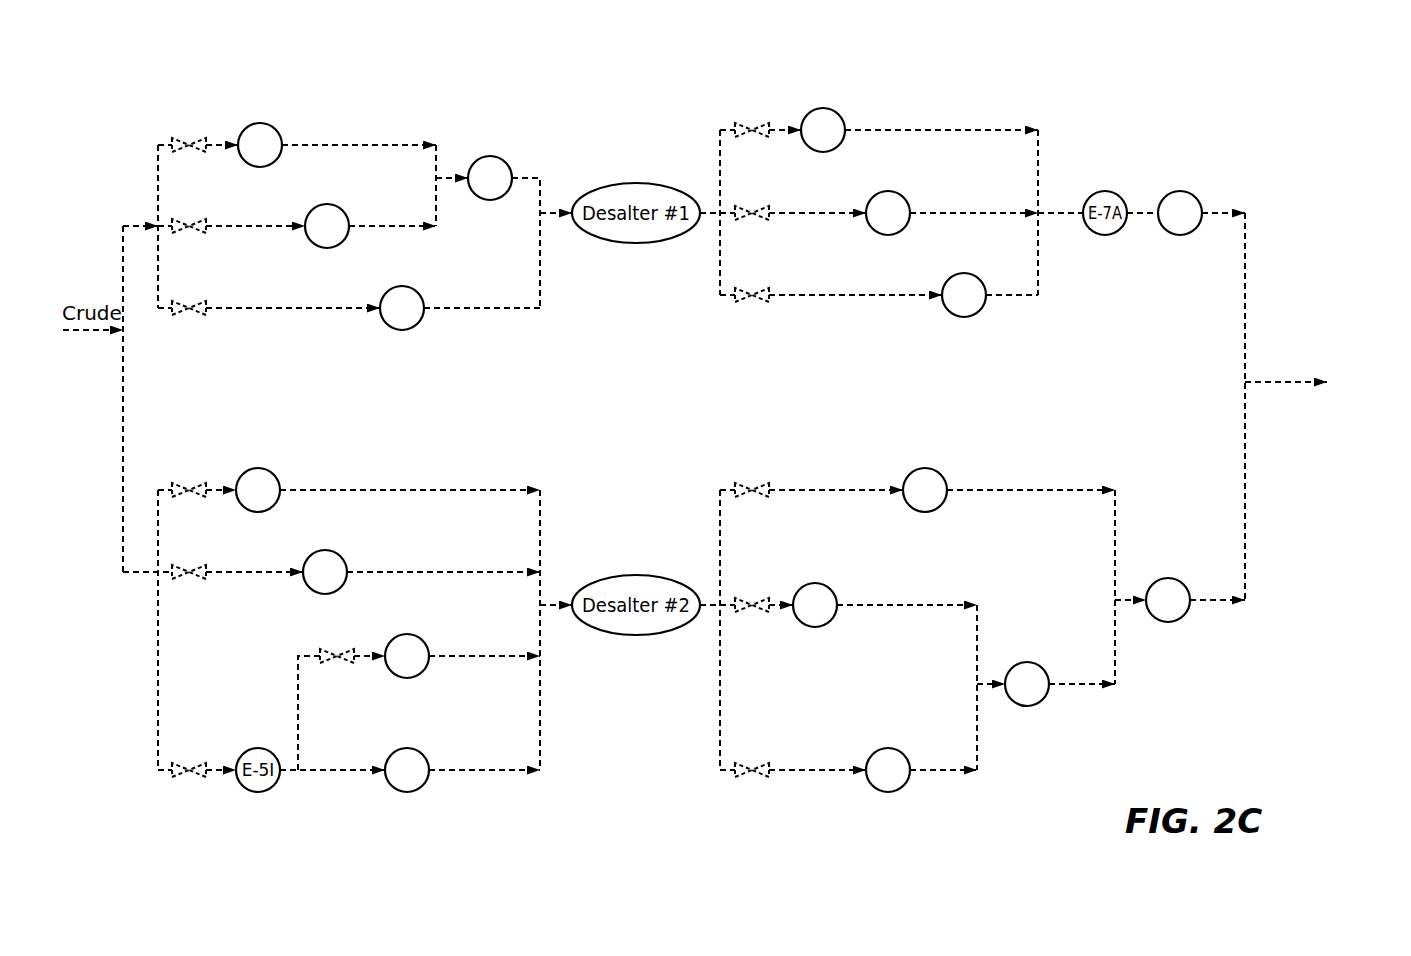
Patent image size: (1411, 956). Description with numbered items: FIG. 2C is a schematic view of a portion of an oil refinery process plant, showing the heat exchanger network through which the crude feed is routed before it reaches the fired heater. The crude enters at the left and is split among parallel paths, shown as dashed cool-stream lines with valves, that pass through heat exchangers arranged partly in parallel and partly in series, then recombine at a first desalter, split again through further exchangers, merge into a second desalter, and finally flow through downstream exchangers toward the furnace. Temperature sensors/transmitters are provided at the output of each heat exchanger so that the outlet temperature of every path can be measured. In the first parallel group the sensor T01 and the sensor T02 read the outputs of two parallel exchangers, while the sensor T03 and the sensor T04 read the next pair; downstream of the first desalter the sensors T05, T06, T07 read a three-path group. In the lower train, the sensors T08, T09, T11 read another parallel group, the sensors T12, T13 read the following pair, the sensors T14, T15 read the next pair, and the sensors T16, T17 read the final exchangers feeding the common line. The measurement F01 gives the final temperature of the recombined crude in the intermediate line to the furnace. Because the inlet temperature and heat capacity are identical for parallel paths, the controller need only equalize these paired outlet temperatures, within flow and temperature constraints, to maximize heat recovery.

The temperature sensor/transmitter T01 is at (295, 145).
The temperature sensor/transmitter T02 is at (363, 226).
The temperature sensor/transmitter T03 is at (528, 178).
The temperature sensor/transmitter T04 is at (437, 308).
The temperature sensor/transmitter T05 is at (857, 130).
The temperature sensor/transmitter T06 is at (927, 213).
The temperature sensor/transmitter T07 is at (998, 295).
The temperature sensor/transmitter T08 is at (295, 490).
The temperature sensor/transmitter T09 is at (363, 572).
The temperature sensor/transmitter T11 is at (451, 656).
The temperature sensor/transmitter T12 is at (853, 605).
The temperature sensor/transmitter T13 is at (933, 770).
The temperature sensor/transmitter T14 is at (962, 490).
The temperature sensor/transmitter T15 is at (1071, 684).
The temperature sensor/transmitter T16 is at (1213, 213).
The temperature sensor/transmitter T17 is at (1206, 600).
The final temperature measurement F01 is at (1287, 382).